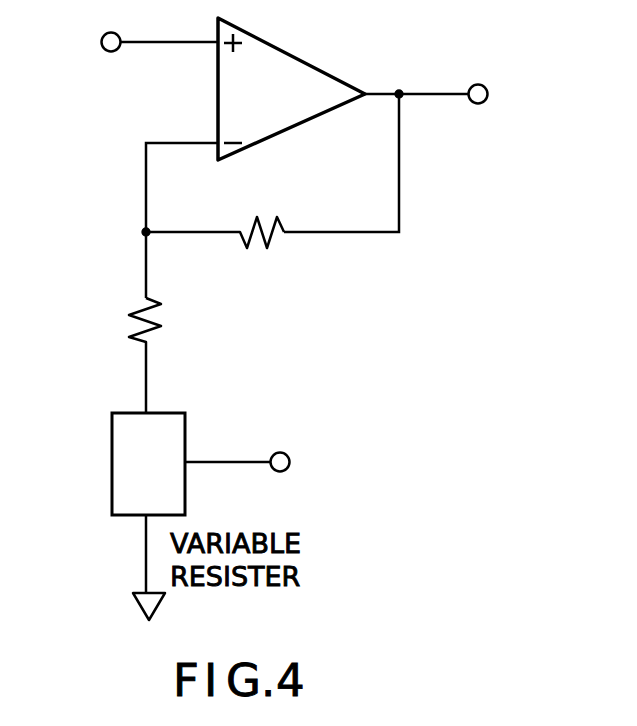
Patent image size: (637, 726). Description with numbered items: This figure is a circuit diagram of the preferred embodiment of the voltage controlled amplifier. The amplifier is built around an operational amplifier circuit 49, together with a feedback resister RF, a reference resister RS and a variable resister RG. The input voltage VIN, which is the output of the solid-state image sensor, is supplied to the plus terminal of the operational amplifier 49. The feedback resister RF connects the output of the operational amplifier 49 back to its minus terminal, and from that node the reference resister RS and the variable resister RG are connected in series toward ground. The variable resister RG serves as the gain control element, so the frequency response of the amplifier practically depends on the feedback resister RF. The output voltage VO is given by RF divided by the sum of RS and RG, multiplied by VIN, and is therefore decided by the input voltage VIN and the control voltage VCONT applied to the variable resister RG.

The operational amplifier circuit 49 is at (316, 73).
The input voltage VIN is at (140, 47).
The output voltage VO is at (444, 97).
The feedback resister RF is at (272, 191).
The reference resister RS is at (123, 355).
The variable resister RG is at (125, 464).
The control voltage VCONT is at (273, 468).